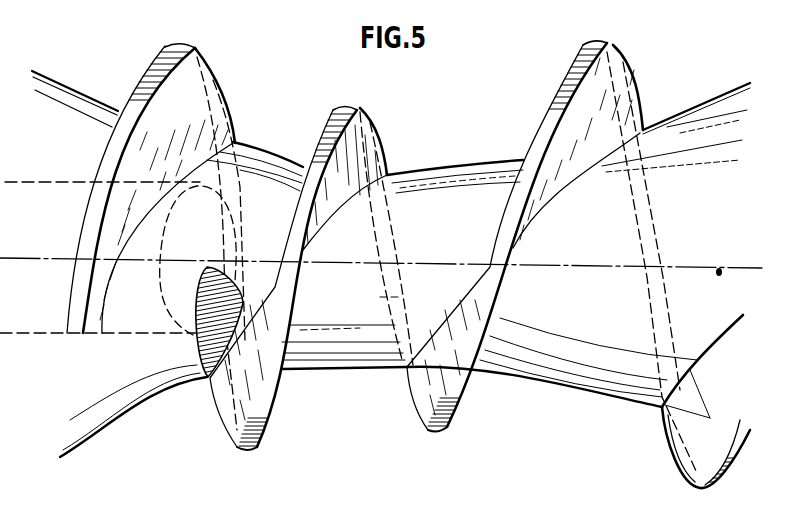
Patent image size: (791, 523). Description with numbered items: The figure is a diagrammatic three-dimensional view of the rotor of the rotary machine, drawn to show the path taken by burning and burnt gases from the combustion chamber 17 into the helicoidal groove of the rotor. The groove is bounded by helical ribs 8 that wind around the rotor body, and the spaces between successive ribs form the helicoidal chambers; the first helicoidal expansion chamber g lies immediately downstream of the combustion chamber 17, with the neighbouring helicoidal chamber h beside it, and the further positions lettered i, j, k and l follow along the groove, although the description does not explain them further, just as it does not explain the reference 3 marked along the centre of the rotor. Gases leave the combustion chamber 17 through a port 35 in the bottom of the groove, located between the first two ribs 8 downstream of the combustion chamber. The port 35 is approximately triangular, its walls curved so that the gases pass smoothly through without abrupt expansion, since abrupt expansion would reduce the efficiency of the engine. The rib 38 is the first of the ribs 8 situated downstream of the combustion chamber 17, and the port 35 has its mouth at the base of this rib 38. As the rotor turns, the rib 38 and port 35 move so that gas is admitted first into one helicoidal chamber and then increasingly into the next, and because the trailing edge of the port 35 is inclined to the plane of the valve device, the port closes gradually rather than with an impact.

The ribs 8 is at (195, 48).
The combustion chamber 17 is at (33, 182).
The axis of rotation 3 is at (743, 272).
The port 35 is at (194, 346).
The rib 38 is at (278, 325).
The first helicoidal expansion chamber g is at (133, 411).
The helicoidal chamber h is at (167, 131).
The hub surface position i is at (344, 354).
The hub surface position j is at (455, 157).
The hub surface position k is at (558, 374).
The hub surface position l is at (676, 122).